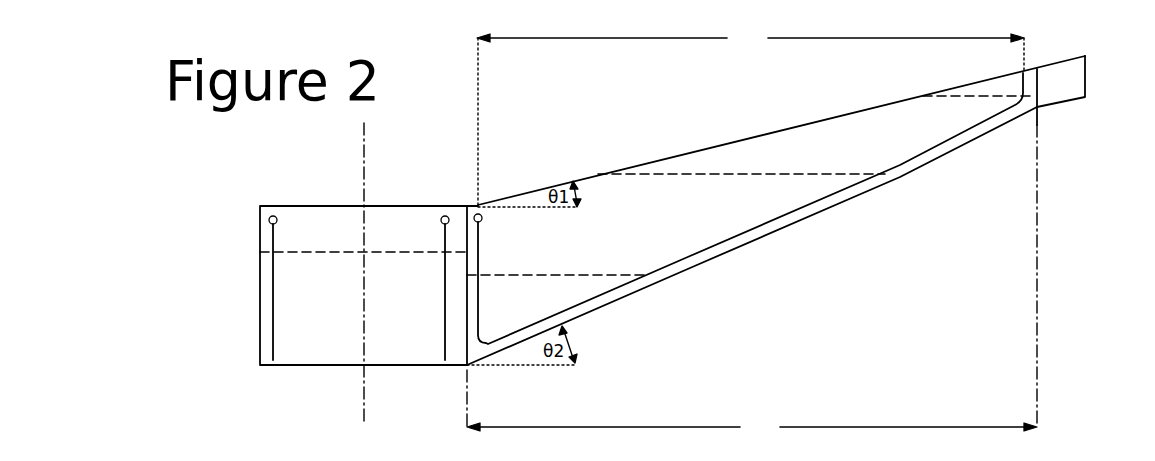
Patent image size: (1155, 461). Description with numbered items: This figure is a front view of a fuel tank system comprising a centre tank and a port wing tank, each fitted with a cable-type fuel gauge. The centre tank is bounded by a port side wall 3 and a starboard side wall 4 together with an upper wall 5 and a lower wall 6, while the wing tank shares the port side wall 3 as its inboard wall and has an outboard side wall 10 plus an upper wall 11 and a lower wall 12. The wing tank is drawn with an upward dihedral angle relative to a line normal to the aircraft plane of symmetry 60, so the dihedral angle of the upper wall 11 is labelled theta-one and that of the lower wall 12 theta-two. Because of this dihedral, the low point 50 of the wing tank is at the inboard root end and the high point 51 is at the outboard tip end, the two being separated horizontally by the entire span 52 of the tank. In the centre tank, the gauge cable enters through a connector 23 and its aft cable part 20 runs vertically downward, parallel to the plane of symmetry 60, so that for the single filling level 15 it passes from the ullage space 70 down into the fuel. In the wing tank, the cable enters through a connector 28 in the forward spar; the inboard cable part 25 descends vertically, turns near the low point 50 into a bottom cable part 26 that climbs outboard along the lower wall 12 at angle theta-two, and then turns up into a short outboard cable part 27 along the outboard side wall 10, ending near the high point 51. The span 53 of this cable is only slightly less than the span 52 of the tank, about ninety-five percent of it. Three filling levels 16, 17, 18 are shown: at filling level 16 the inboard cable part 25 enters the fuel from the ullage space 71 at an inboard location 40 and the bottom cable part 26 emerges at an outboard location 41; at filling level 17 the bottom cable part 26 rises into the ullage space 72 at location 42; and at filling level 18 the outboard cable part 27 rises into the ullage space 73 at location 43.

The port side wall 3 is at (468, 338).
The starboard side wall 4 is at (260, 282).
The upper wall 5 is at (300, 206).
The lower wall 6 is at (312, 367).
The outboard side wall 10 is at (1045, 105).
The upper wall 11 is at (735, 142).
The lower wall 12 is at (942, 160).
The filling level 15 is at (392, 252).
The filling level 16 is at (587, 275).
The filling level 17 is at (785, 172).
The filling level 18 is at (953, 92).
The aft cable part 20 is at (272, 325).
The connector 23 is at (268, 218).
The inboard cable part 25 is at (478, 260).
The bottom cable part 26 is at (570, 308).
The outboard cable part 27 is at (1025, 88).
The connector 28 is at (481, 214).
The inboard location 40 is at (478, 275).
The outboard location 41 is at (648, 273).
The location 42 is at (885, 173).
The location 43 is at (1033, 97).
The low point 50 is at (480, 353).
The high point 51 is at (1032, 75).
The span of the wing tank 52 is at (752, 403).
The span of the cable 53 is at (750, 117).
The plane of symmetry 60 is at (365, 158).
The ullage space 70 is at (338, 241).
The ullage space 71 is at (652, 214).
The ullage space 72 is at (863, 151).
The ullage space 73 is at (988, 88).